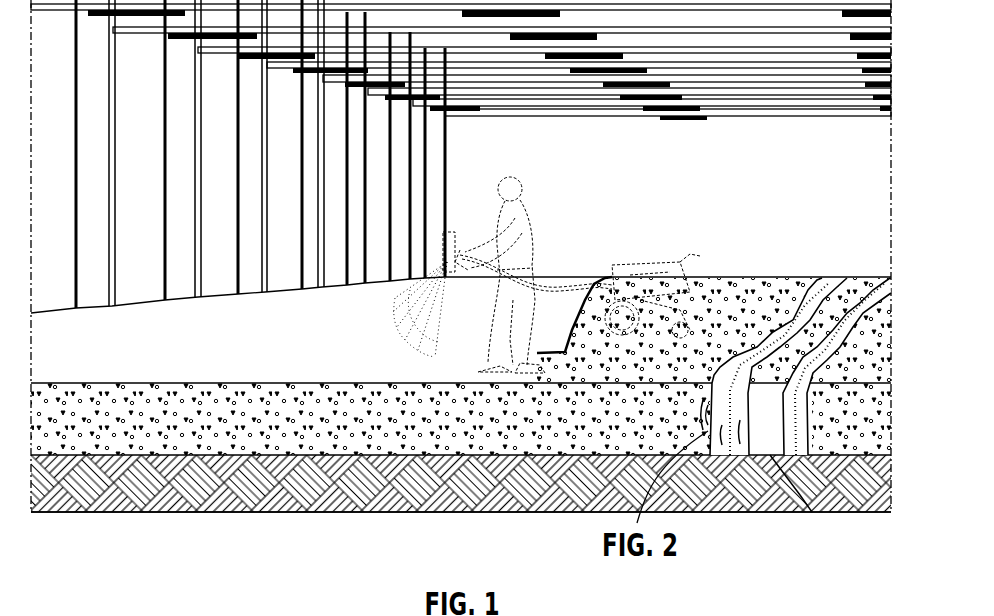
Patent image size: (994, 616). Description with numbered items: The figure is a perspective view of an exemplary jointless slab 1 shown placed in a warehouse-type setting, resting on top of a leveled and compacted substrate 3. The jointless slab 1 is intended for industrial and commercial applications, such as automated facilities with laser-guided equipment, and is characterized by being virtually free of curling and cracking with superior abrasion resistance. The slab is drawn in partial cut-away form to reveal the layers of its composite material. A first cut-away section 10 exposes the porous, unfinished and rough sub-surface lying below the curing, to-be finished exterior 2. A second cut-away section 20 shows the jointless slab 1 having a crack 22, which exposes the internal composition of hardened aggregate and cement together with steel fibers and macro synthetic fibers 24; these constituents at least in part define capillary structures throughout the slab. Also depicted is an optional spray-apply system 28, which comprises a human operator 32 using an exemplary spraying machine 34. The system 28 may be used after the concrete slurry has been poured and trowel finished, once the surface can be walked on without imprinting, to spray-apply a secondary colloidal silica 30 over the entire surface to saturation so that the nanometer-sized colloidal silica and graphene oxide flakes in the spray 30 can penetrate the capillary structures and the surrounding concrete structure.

The jointless slab 1 is at (279, 470).
The curing/to-be finished exterior 2 is at (284, 358).
The substrate 3 is at (153, 498).
The first cut-away section 10 is at (753, 268).
The second cut-away section 20 is at (824, 325).
The crack 22 is at (790, 470).
The steel fibers and macro synthetic fibers 24 is at (810, 373).
The spray-apply system 28 is at (527, 171).
The secondary colloidal silica 30 is at (382, 323).
The human operator 32 is at (488, 348).
The spraying machine 34 is at (668, 275).